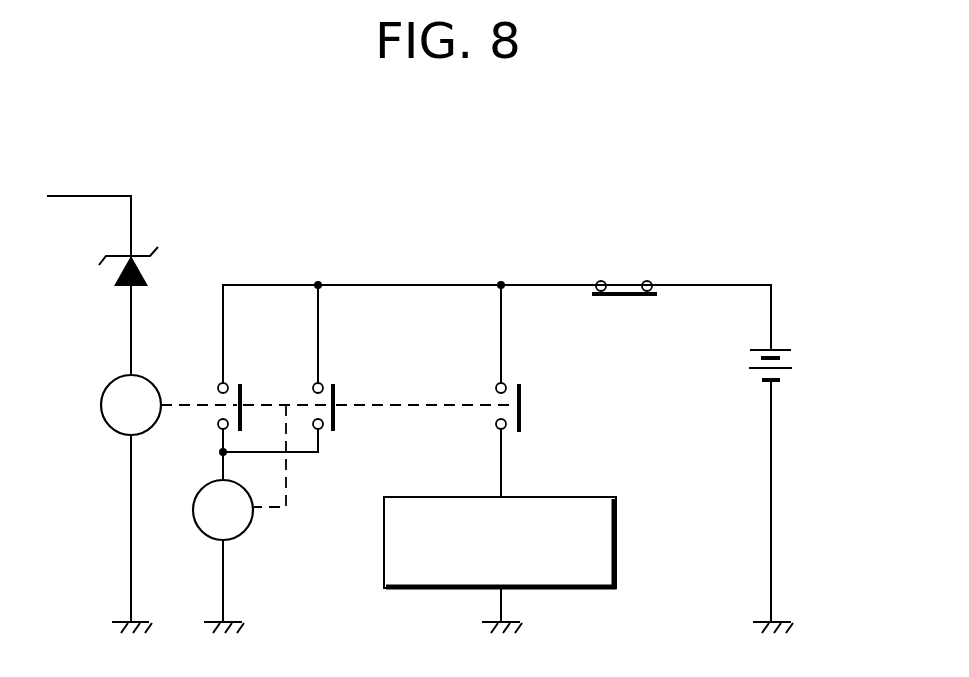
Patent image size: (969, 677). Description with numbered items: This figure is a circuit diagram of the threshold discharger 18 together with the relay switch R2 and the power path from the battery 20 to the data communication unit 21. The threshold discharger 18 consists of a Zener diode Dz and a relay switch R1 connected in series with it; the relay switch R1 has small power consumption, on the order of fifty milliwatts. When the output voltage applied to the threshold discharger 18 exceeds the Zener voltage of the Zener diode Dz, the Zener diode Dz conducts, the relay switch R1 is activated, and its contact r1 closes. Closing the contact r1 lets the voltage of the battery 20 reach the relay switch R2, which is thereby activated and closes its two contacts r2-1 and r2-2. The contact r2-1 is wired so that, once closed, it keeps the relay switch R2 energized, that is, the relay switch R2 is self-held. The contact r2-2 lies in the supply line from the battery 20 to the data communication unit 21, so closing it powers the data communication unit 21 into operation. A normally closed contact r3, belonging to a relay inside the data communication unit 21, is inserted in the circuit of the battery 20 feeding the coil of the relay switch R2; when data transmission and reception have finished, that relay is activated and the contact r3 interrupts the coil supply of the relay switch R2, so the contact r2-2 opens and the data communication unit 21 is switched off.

The threshold discharger 18 is at (104, 355).
The battery 20 is at (787, 350).
The data communication unit 21 is at (617, 540).
The Zener diode Dz is at (106, 274).
The relay switch R1 is at (131, 405).
The relay switch R2 is at (223, 510).
The contact r1 is at (242, 396).
The contact r2-1 is at (335, 395).
The contact r2-2 is at (521, 398).
The normally closed contact r3 is at (629, 283).